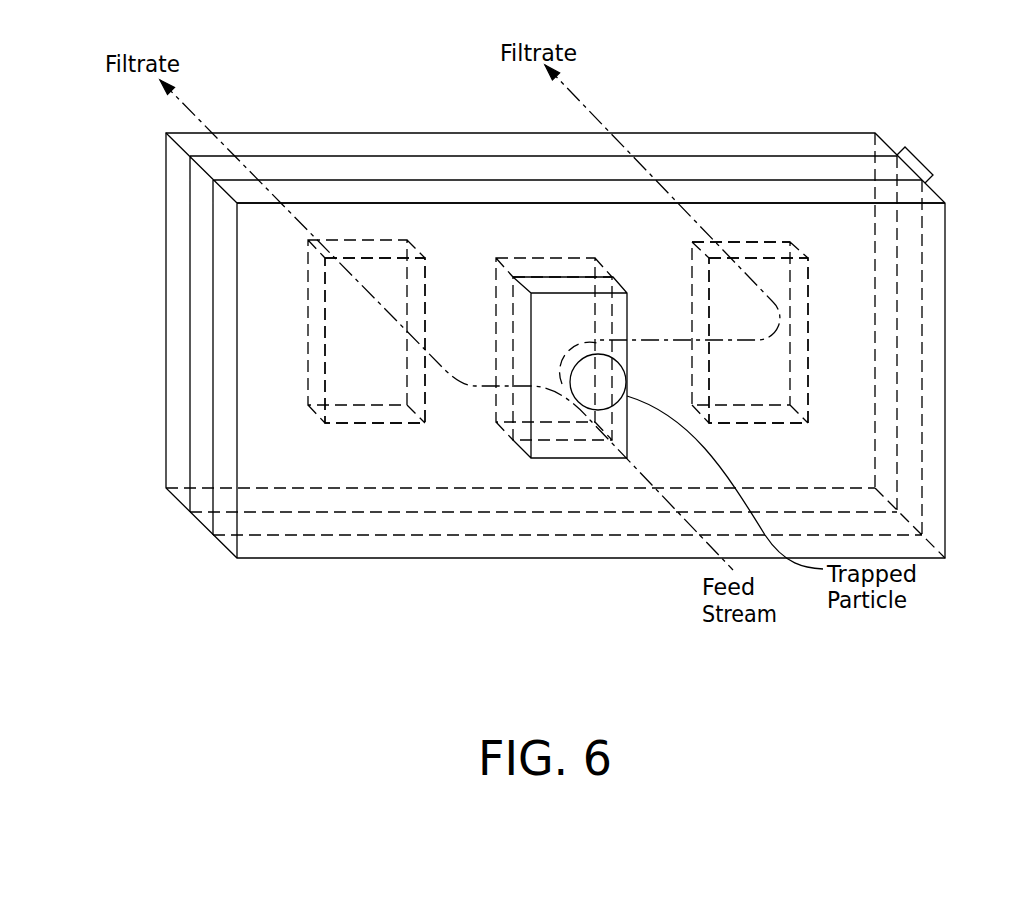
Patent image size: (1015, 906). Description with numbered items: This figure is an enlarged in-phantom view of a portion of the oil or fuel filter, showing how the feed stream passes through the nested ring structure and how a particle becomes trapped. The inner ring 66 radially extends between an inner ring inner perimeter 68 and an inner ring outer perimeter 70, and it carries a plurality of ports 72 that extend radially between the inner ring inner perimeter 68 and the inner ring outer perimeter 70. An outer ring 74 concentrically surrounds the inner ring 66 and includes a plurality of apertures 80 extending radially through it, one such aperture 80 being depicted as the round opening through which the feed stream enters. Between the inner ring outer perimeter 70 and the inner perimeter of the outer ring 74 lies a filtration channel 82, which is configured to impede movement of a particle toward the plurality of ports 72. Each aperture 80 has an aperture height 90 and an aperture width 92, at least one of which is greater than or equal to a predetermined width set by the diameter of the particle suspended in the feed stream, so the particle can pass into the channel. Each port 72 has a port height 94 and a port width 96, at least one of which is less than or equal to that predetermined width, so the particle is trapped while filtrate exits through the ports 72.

The inner ring 66 is at (855, 147).
The inner ring inner perimeter 68 is at (760, 240).
The inner ring outer perimeter 70 is at (800, 256).
The ports 72 is at (757, 393).
The outer ring 74 is at (870, 193).
The apertures 80 is at (557, 447).
The filtration channel 82 is at (914, 152).
The aperture height 90 is at (492, 362).
The aperture width 92 is at (612, 262).
The port height 94 is at (308, 258).
The port width 96 is at (425, 437).